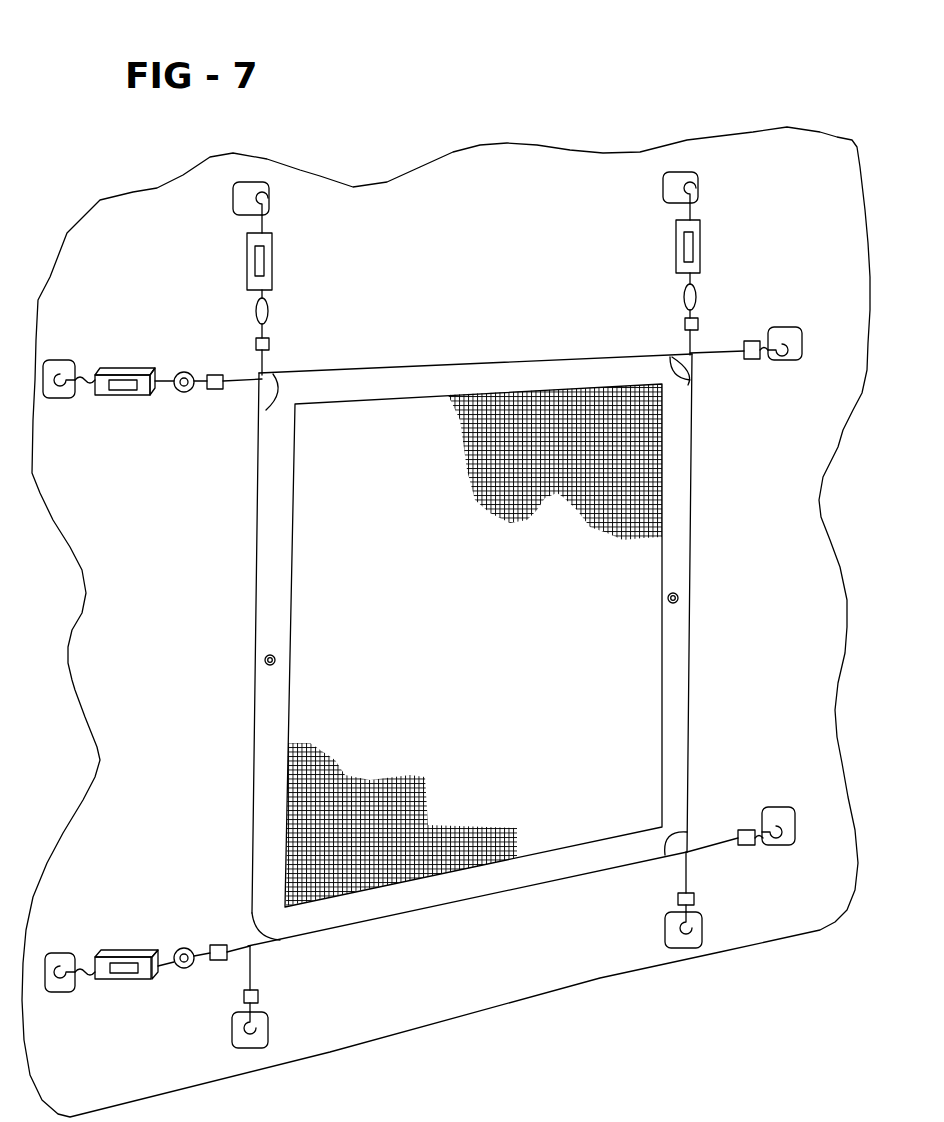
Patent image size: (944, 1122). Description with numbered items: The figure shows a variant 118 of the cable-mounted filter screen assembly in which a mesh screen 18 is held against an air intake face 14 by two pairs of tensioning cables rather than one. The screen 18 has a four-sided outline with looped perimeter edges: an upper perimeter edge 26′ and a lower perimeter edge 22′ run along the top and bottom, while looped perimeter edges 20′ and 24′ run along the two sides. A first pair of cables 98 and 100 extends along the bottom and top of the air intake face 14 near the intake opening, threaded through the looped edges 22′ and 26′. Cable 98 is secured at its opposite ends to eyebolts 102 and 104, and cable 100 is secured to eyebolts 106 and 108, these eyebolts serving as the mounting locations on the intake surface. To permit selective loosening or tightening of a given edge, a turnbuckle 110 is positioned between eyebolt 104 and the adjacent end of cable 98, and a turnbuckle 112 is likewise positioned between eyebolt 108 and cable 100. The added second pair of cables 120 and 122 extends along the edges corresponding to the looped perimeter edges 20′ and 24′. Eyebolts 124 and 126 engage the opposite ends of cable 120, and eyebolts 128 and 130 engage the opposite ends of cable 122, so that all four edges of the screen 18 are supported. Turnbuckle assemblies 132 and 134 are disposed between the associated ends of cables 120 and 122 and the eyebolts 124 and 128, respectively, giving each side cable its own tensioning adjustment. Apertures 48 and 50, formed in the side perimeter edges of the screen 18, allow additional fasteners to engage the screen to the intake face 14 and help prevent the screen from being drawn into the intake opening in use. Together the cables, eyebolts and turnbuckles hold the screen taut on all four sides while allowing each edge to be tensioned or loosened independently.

The air intake face 14 is at (492, 190).
The screen 18 is at (460, 617).
The looped perimeter edge 20′ is at (683, 684).
The lower perimeter edge 22′ is at (462, 904).
The looped perimeter edge 24′ is at (260, 720).
The upper perimeter edge 26′ is at (502, 358).
The aperture 48 is at (680, 597).
The aperture 50 is at (265, 660).
The cable 98 is at (250, 935).
The cable 100 is at (245, 372).
The eyebolt 102 is at (57, 947).
The eyebolt 104 is at (773, 805).
The eyebolt 106 is at (55, 358).
The eyebolt 108 is at (787, 320).
The turnbuckle 110 is at (133, 983).
The turnbuckle 112 is at (122, 403).
The variant 118 is at (401, 100).
The cable 120 is at (700, 369).
The cable 122 is at (263, 396).
The eyebolt 124 is at (643, 194).
The eyebolt 126 is at (665, 928).
The eyebolt 128 is at (233, 197).
The eyebolt 130 is at (230, 1040).
The turnbuckle assembly 132 is at (702, 237).
The turnbuckle assembly 134 is at (273, 257).